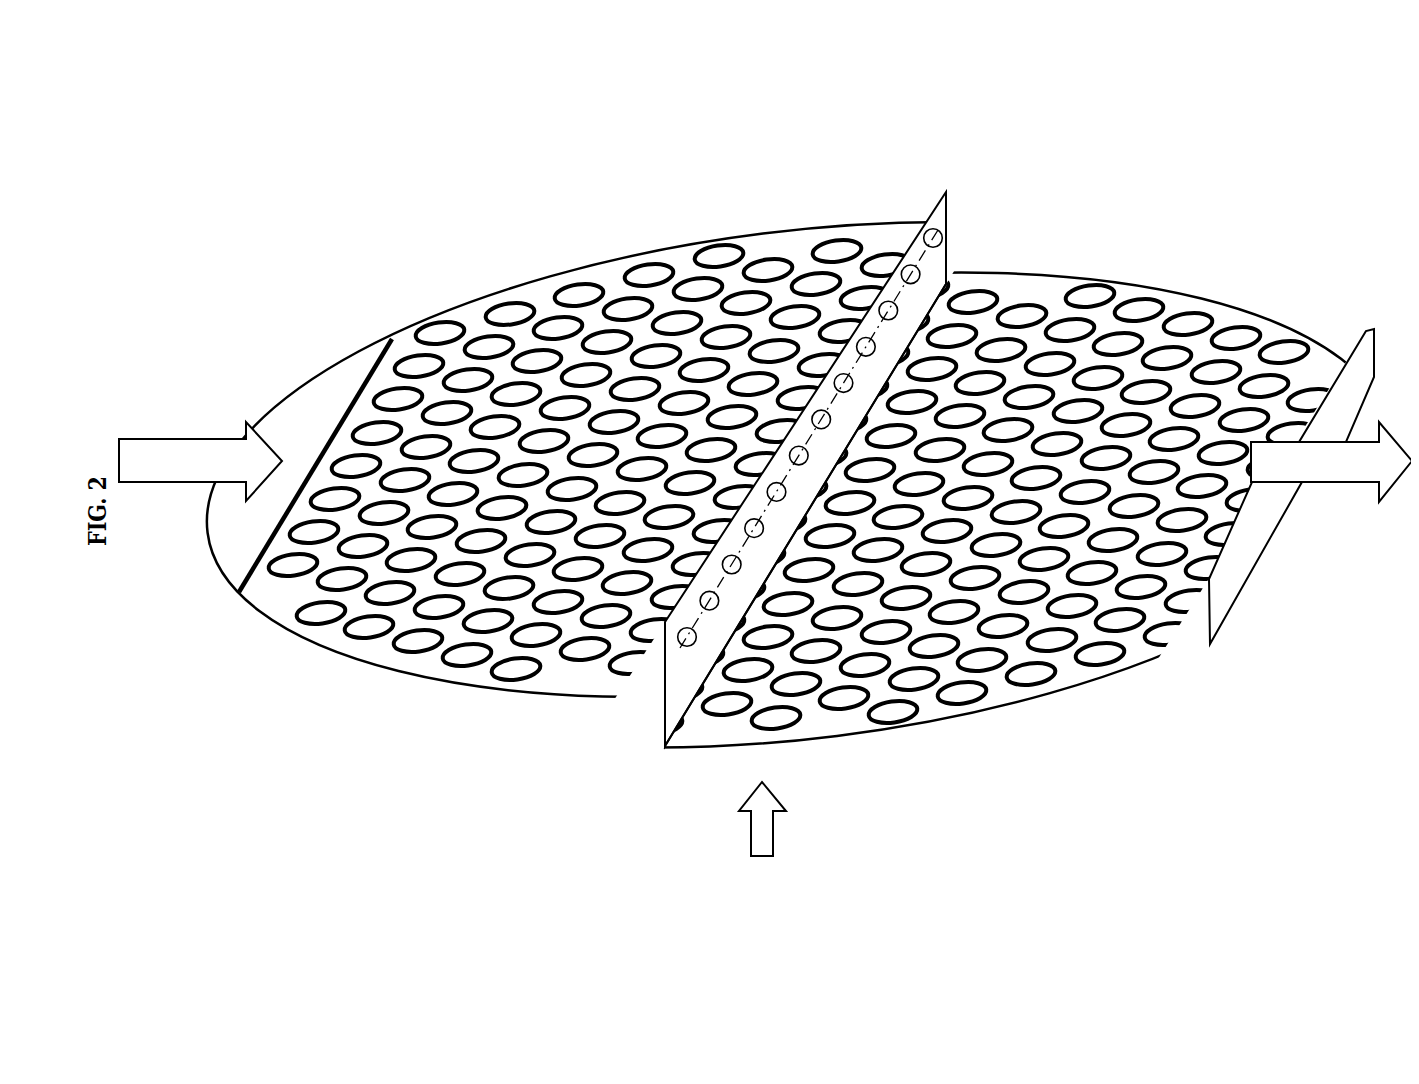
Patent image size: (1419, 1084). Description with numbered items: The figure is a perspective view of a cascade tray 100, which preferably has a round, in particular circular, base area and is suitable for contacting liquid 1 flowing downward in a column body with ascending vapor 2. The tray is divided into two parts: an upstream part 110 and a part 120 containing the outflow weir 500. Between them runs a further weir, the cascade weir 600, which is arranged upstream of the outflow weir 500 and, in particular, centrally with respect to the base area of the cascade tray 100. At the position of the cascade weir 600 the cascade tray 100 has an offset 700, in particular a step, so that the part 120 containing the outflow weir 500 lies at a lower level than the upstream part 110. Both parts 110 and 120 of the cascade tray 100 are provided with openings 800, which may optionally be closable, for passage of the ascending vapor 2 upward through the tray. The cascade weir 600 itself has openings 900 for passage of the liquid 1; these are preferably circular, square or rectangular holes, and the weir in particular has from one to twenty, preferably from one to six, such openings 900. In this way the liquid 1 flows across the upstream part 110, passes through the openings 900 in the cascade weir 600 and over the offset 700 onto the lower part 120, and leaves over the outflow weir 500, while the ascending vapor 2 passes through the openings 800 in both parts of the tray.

The cascade tray 100 is at (431, 207).
The upstream part 110 is at (476, 684).
The part containing the outflow weir 120 is at (1029, 691).
The outflow weir 500 is at (1351, 366).
The cascade weir 600 is at (940, 207).
The offset 700 is at (653, 739).
The openings 800 is at (603, 334).
The openings 900 is at (925, 262).
The liquid 1 is at (146, 449).
The ascending vapor 2 is at (759, 821).